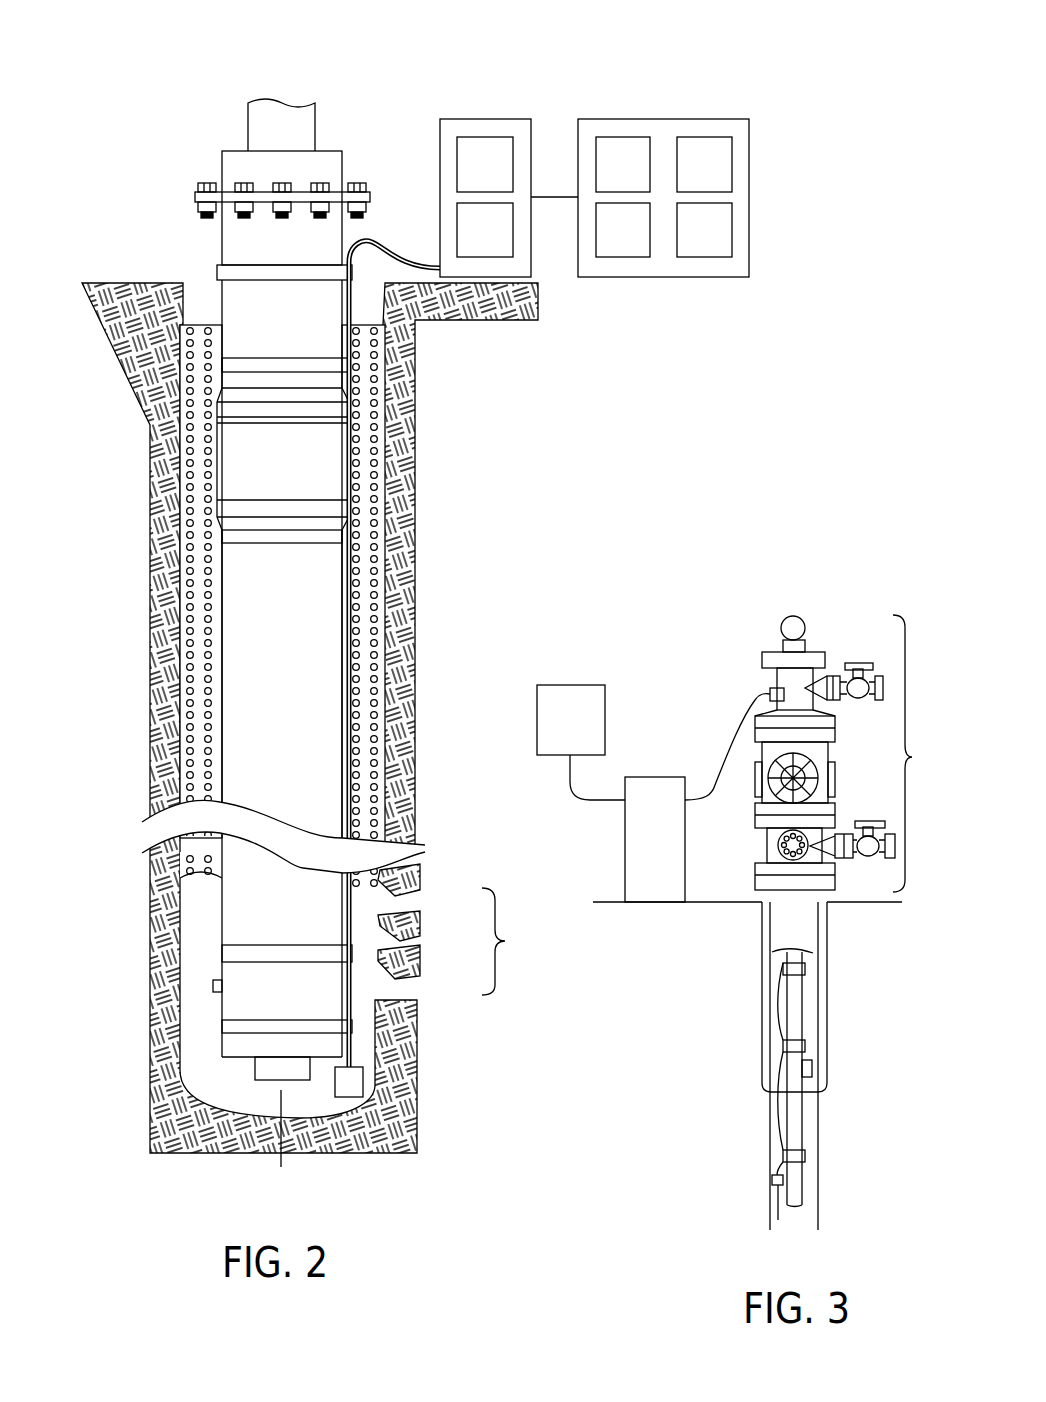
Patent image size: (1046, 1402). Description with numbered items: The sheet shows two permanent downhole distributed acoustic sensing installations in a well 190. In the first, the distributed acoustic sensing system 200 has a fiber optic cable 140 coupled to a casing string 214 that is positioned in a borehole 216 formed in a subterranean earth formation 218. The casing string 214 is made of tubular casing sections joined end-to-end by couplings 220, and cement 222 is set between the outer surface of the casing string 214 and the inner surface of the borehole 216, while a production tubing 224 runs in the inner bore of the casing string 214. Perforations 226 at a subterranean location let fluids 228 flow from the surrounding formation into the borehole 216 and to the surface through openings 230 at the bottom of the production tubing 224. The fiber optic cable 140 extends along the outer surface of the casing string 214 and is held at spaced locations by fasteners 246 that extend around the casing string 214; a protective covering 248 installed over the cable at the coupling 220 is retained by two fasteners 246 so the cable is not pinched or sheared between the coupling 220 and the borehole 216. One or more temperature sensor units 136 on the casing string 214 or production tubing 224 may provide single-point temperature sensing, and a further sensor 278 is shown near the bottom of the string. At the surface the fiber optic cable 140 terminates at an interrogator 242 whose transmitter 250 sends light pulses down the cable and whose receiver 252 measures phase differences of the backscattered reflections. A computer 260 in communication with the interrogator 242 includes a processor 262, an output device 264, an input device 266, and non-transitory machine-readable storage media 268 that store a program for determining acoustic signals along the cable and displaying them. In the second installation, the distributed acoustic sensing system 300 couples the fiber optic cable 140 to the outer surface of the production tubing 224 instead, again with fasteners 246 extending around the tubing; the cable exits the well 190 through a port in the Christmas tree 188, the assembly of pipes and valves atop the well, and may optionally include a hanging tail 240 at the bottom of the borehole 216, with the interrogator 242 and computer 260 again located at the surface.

In FIG. 2, the temperature sensor unit 136 is at (213, 985).
In FIG. 3, the temperature sensor unit 136 is at (812, 1068).
In FIG. 2, the fiber optic cable 140 is at (400, 258).
In FIG. 3, the fiber optic cable 140 is at (728, 745).
In FIG. 3, the Christmas tree 188 is at (862, 753).
In FIG. 2, the well 190 is at (188, 76).
In FIG. 3, the well 190 is at (820, 573).
In FIG. 2, the distributed acoustic sensing system 200 is at (345, 43).
In FIG. 2, the casing string 214 is at (222, 232).
In FIG. 3, the casing string 214 is at (818, 937).
In FIG. 2, the borehole 216 is at (190, 268).
In FIG. 2, the subterranean earth formation 218 is at (97, 318).
In FIG. 3, the subterranean earth formation 218 is at (663, 1075).
In FIG. 2, the coupling 220 is at (264, 477).
In FIG. 2, the cement 222 is at (372, 632).
In FIG. 2, the production tubing 224 is at (316, 130).
In FIG. 3, the production tubing 224 is at (802, 1125).
In FIG. 2, the perforations 226 is at (516, 941).
In FIG. 2, the fluids 228 is at (380, 995).
In FIG. 2, the openings 230 is at (283, 1146).
In FIG. 3, the hanging tail 240 is at (776, 1210).
In FIG. 2, the interrogator 242 is at (509, 167).
In FIG. 3, the interrogator 242 is at (636, 850).
In FIG. 2, the fasteners 246 is at (258, 265).
In FIG. 3, the fasteners 246 is at (805, 968).
In FIG. 2, the protective covering 248 is at (357, 453).
In FIG. 2, the transmitter 250 is at (466, 178).
In FIG. 2, the receiver 252 is at (466, 244).
In FIG. 2, the computer 260 is at (663, 167).
In FIG. 3, the computer 260 is at (552, 730).
In FIG. 2, the processor 262 is at (604, 178).
In FIG. 2, the output device 264 is at (604, 244).
In FIG. 2, the input device 266 is at (685, 178).
In FIG. 2, the non-transitory machine-readable storage media 268 is at (685, 244).
In FIG. 2, the bottom sensor 278 is at (363, 1082).
In FIG. 3, the bottom sensor 278 is at (772, 1180).
In FIG. 3, the distributed acoustic sensing system 300 is at (630, 653).